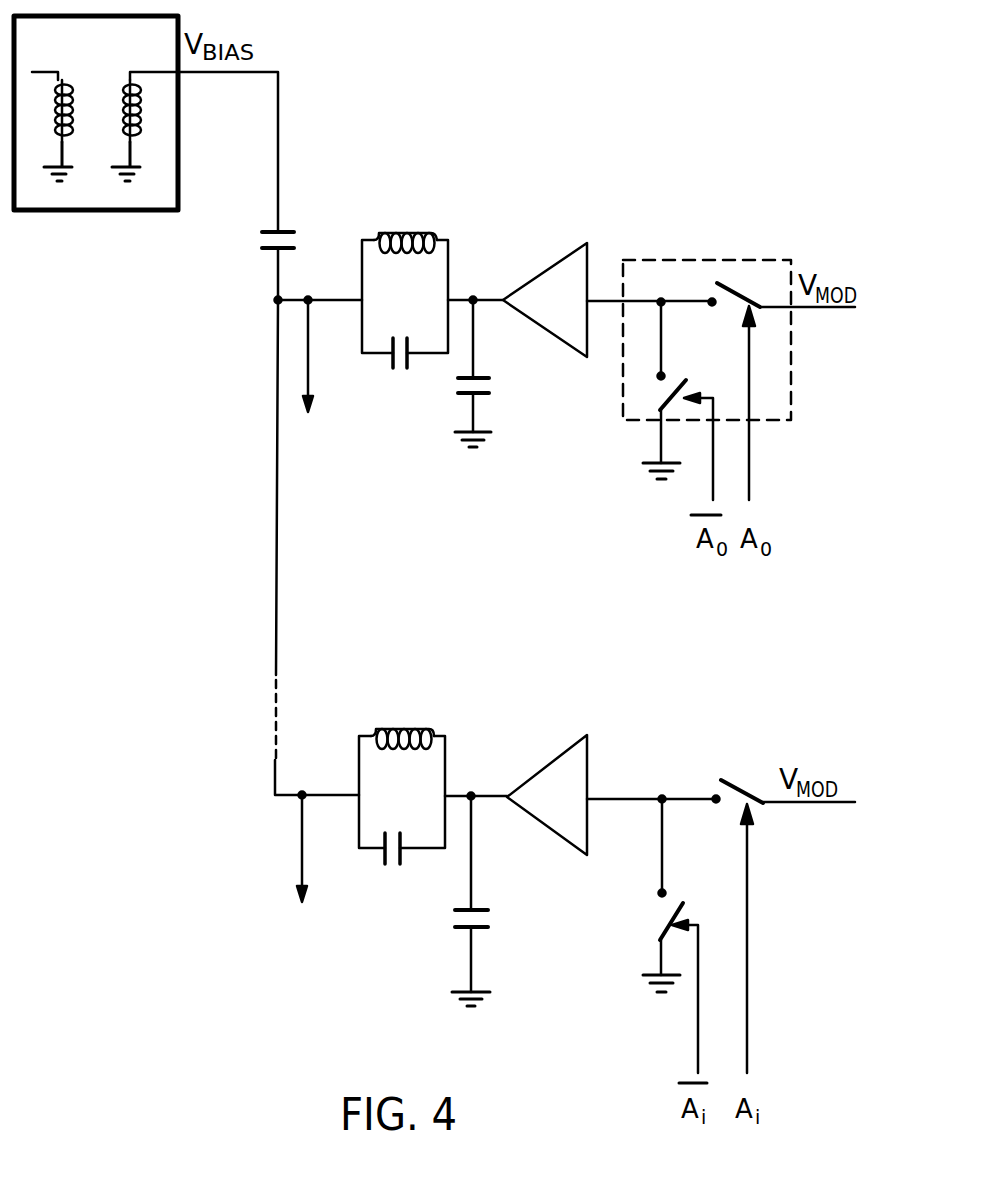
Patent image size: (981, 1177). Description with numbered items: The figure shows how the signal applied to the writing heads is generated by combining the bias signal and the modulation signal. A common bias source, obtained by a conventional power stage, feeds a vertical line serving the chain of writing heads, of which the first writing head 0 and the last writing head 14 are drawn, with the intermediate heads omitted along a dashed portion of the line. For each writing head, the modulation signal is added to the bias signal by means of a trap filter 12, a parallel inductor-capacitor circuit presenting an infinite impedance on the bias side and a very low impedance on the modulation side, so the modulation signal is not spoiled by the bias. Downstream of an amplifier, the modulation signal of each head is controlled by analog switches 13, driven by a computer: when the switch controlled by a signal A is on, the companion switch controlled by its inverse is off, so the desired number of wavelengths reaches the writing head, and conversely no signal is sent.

The trap filter 12 is at (434, 231).
The analog switches 13 is at (721, 258).
The writing head WR0 0 is at (314, 379).
The writing head WR14 14 is at (313, 870).